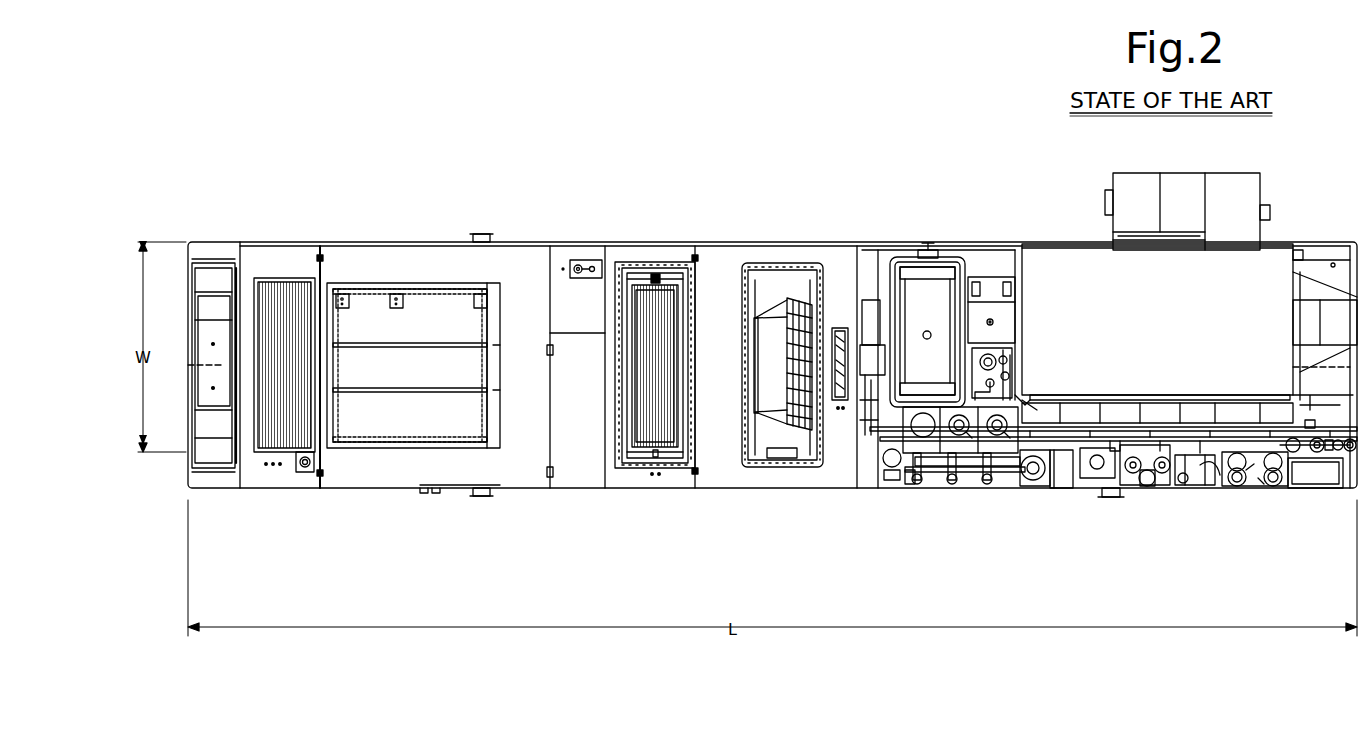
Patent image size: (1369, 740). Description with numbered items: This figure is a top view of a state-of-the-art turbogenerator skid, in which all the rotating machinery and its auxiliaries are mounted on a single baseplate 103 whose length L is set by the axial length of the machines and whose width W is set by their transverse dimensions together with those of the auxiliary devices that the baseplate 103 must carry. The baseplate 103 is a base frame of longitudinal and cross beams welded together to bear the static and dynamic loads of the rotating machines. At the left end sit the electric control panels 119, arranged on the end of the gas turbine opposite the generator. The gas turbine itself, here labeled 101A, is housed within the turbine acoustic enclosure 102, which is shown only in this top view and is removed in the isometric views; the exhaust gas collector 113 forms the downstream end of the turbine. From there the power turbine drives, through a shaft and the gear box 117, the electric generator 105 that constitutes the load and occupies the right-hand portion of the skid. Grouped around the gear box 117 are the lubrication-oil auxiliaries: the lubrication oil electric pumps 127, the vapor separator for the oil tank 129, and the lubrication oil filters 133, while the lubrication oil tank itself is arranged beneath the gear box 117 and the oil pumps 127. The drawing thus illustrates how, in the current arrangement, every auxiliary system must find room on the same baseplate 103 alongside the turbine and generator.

The filter module 101A is at (638, 262).
The turbine acoustic enclosure 102 is at (508, 265).
The baseplate 103 is at (214, 257).
The electric generator 105 is at (1058, 270).
The exhaust gas collector 113 is at (782, 300).
The gear box 117 is at (940, 316).
The electric control panels 119 is at (200, 312).
The lubrication oil electric pumps 127 is at (963, 490).
The vapor separator for the oil tank 129 is at (1060, 490).
The lubrication oil filters 133 is at (1266, 490).